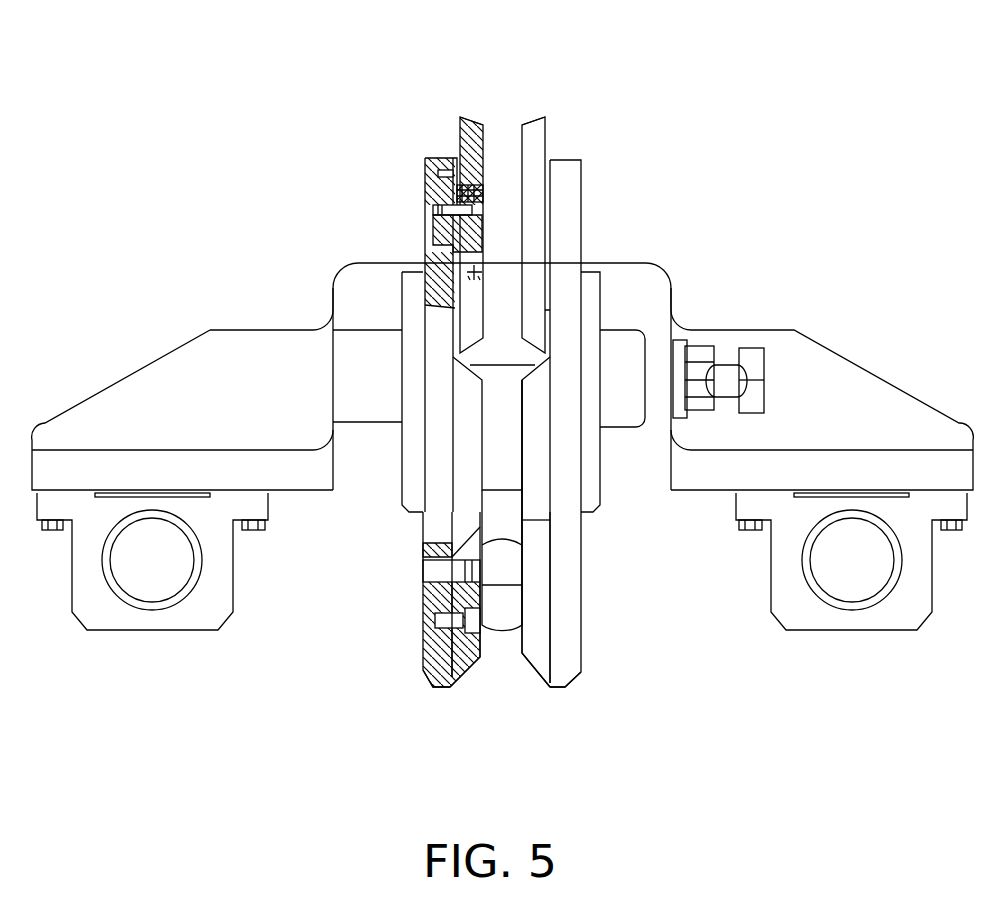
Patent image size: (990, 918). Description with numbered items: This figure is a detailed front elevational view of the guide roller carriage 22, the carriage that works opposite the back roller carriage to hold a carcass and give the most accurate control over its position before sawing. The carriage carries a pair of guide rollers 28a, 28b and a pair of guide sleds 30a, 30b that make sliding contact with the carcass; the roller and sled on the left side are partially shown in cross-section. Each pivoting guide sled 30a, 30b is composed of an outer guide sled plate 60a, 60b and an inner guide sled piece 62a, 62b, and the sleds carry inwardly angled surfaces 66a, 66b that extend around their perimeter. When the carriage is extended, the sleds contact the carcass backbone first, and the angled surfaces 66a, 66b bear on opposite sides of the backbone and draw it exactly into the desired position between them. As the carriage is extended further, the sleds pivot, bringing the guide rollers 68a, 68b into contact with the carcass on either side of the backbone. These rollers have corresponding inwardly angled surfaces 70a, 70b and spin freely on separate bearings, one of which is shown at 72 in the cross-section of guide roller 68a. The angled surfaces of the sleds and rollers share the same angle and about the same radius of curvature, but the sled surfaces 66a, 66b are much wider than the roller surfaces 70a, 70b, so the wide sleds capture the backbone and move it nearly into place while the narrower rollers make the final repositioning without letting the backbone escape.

The guide roller carriage 22 is at (858, 250).
The guide roller 28a is at (401, 401).
The guide roller 28b is at (606, 398).
The inwardly angled surface 70a is at (473, 120).
The inwardly angled surface 70b is at (530, 118).
The guide roller 68a is at (458, 137).
The guide roller 68b is at (547, 137).
The bearing 72 is at (445, 230).
The inner guide sled piece 62a is at (482, 520).
The inner guide sled piece 62b is at (538, 532).
The outer guide sled plate 60a is at (397, 599).
The outer guide sled plate 60b is at (611, 423).
The inwardly angled surface 66a is at (459, 692).
The inwardly angled surface 66b is at (541, 694).
The guide sled 30a is at (409, 697).
The guide sled 30b is at (584, 696).